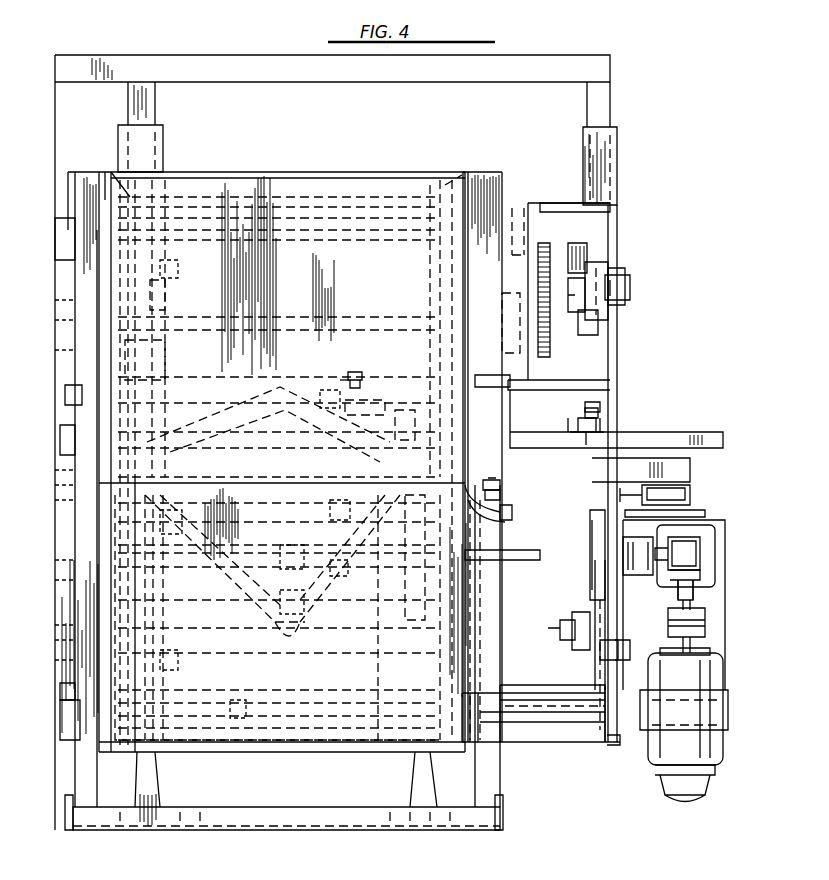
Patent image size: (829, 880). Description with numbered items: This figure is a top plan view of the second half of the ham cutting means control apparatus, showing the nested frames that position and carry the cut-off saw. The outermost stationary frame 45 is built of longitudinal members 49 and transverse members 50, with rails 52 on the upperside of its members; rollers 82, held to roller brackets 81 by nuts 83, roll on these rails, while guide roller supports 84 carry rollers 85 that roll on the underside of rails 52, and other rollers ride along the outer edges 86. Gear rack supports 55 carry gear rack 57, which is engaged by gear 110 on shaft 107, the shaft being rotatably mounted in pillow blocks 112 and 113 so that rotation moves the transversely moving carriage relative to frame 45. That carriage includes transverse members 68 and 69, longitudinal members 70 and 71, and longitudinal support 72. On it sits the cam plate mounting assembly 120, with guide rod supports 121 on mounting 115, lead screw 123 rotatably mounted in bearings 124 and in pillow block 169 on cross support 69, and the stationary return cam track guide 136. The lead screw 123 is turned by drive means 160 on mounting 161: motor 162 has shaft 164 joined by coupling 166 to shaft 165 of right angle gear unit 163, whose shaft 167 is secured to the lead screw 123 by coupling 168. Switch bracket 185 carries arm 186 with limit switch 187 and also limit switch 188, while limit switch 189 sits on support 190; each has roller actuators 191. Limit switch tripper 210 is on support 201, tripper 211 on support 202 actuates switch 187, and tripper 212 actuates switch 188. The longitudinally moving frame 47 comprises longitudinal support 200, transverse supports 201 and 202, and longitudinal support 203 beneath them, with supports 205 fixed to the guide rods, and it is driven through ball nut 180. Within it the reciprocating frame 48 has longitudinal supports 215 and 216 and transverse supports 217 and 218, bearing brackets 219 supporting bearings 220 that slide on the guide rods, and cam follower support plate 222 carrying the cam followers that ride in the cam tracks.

The stationary frame 45 is at (160, 54).
The longitudinal members 49 is at (157, 103).
The rails 52 is at (165, 150).
The outer edges 86 is at (618, 202).
The longitudinal support 203 is at (108, 185).
The longitudinal support 216 is at (350, 165).
The longitudinally moving frame 47 is at (493, 166).
The gear rack supports 55 is at (563, 200).
The transverse support 218 is at (462, 195).
The longitudinal member 70 is at (520, 215).
The reciprocating frame 48 is at (439, 273).
The shaft 107 is at (382, 326).
The pillow block 113 is at (500, 306).
The gear rack 57 is at (550, 265).
The rollers 82 is at (605, 313).
The nuts 83 is at (576, 280).
The rollers 85 is at (607, 283).
The guide roller supports 84 is at (625, 303).
The roller brackets 81 is at (592, 312).
The gear 110 is at (542, 340).
The limit switch tripper 211 is at (485, 372).
The longitudinal support 72 is at (572, 395).
The transverse member 69 is at (600, 406).
The roller actuators 191 is at (360, 375).
The support 190 is at (574, 430).
The limit switch 189 is at (586, 445).
The limit switch 188 is at (500, 488).
The return cam track guide 136 is at (512, 518).
The limit switch tripper 212 is at (502, 524).
The lead screw 123 is at (530, 560).
The pillow block 169 is at (590, 575).
The mounting 115 is at (480, 598).
The bearings 124 is at (411, 576).
The guide rod supports 121 is at (380, 555).
The cam plate mounting assembly 120 is at (384, 662).
The shaft 167 is at (690, 540).
The right angle gear unit 163 is at (705, 530).
The drive means 160 is at (732, 556).
The coupling 168 is at (641, 566).
The shaft 165 is at (690, 605).
The mounting 161 is at (723, 636).
The coupling 166 is at (705, 640).
The shaft 164 is at (700, 655).
The motor 162 is at (712, 762).
The transverse members 50 is at (540, 737).
The longitudinal member 71 is at (572, 720).
The longitudinal support 215 is at (300, 755).
The transverse support 202 is at (500, 785).
The longitudinal support 200 is at (283, 830).
The supports 205 is at (68, 820).
The transverse support 201 is at (75, 770).
The bearing brackets 219 is at (57, 740).
The bearings 220 is at (58, 690).
The limit switch tripper 210 is at (65, 395).
The ball nut 180 is at (60, 442).
The transverse support 217 is at (108, 290).
The pillow block 112 is at (160, 300).
The transverse member 68 is at (172, 366).
The cam follower support plate 222 is at (290, 372).
The limit switch 187 is at (346, 370).
The arm 186 is at (375, 380).
The switch bracket 185 is at (398, 430).